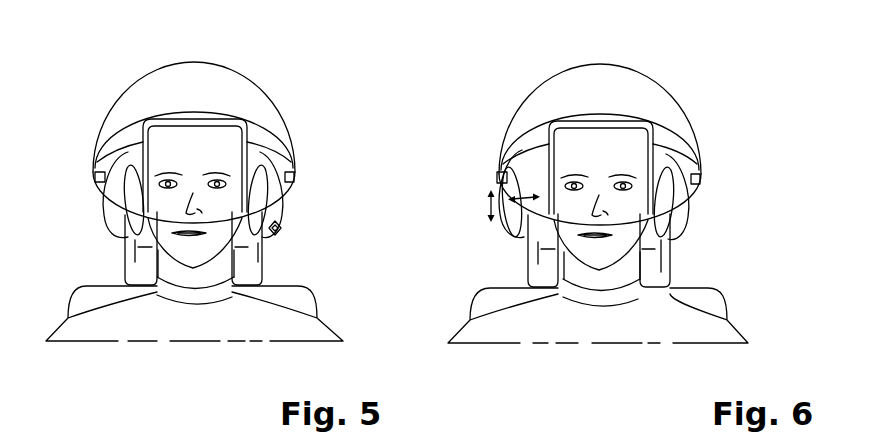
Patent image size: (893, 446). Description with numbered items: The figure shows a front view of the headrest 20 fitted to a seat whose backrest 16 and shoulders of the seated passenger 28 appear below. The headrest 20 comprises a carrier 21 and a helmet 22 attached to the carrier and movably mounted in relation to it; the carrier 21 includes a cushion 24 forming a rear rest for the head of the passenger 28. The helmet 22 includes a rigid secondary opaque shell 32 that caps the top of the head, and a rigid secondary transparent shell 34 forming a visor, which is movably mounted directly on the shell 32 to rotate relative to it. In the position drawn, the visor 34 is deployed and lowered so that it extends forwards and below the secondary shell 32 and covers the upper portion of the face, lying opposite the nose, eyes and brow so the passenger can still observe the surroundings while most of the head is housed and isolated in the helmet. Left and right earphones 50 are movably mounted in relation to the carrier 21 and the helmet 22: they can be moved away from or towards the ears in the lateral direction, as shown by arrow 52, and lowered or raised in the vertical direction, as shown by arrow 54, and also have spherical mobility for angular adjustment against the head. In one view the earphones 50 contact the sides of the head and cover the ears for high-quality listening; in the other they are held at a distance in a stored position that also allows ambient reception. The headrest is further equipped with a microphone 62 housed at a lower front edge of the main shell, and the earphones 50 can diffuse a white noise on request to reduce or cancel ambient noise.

In FIG. 6, the backrest 16 is at (702, 305).
In FIG. 5, the headrest 20 is at (244, 46).
In FIG. 6, the headrest 20 is at (646, 37).
In FIG. 6, the carrier 21 is at (537, 267).
In FIG. 6, the helmet 22 is at (664, 96).
In FIG. 6, the cushion 24 is at (653, 270).
In FIG. 5, the passenger 28 is at (98, 324).
In FIG. 5, the secondary opaque shell 32 is at (177, 77).
In FIG. 6, the secondary opaque shell 32 is at (580, 85).
In FIG. 5, the secondary transparent shell 34 is at (100, 210).
In FIG. 6, the secondary transparent shell 34 is at (678, 162).
In FIG. 5, the earphones 50 is at (118, 214).
In FIG. 6, the earphones 50 is at (522, 228).
In FIG. 6, the arrow 52 is at (528, 195).
In FIG. 6, the arrow 54 is at (488, 199).
In FIG. 5, the microphone 62 is at (282, 228).